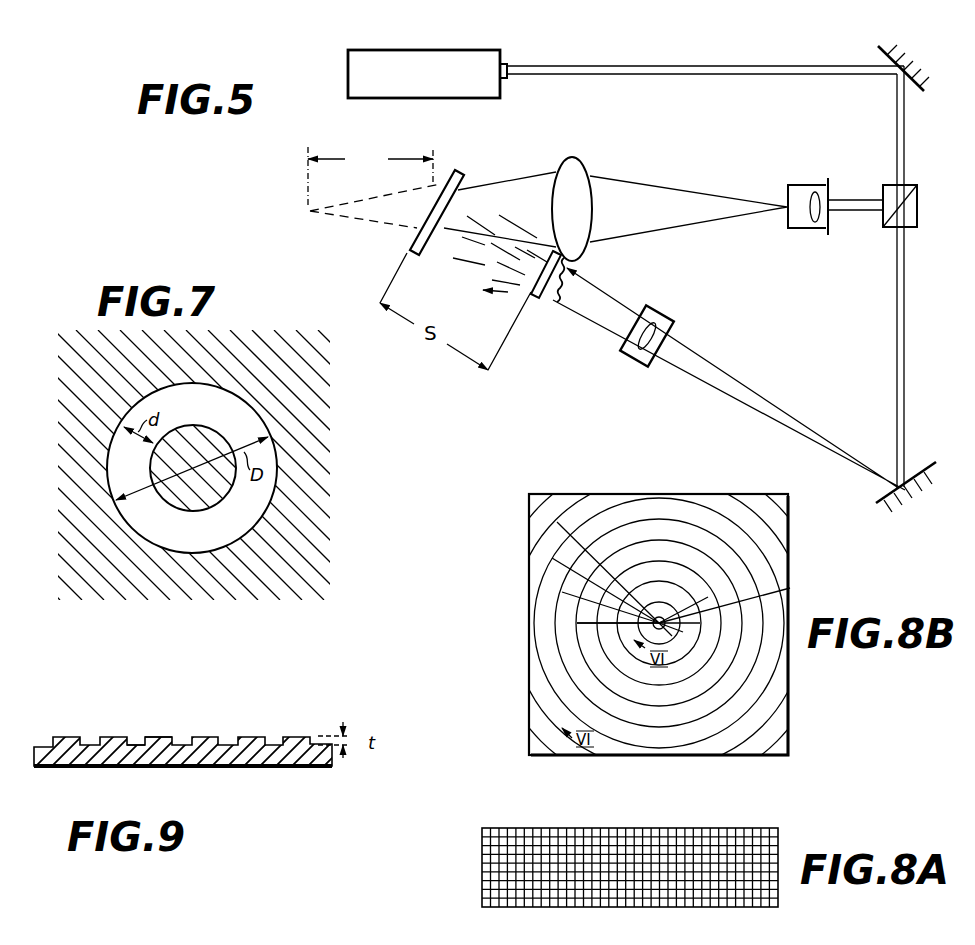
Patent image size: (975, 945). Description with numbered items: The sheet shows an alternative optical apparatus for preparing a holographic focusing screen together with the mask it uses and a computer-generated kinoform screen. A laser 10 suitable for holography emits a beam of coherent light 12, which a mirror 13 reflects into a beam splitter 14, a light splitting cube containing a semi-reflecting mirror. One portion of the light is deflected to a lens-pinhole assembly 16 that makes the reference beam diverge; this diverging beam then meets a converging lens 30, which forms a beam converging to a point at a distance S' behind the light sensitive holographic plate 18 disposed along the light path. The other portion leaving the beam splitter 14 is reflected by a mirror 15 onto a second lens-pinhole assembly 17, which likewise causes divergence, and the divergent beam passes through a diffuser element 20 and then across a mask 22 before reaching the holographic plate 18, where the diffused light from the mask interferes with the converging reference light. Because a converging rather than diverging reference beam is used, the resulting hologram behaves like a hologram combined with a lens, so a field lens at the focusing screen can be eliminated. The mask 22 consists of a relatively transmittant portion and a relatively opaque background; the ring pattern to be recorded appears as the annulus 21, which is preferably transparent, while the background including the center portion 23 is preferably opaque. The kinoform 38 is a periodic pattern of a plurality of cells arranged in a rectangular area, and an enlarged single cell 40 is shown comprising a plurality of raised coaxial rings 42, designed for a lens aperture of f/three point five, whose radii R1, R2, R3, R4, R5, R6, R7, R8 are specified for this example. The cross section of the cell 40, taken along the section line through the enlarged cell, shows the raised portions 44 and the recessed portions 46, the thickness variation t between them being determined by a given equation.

In FIG. 5, the laser 10 is at (410, 50).
In FIG. 5, the beam of coherent light 12 is at (640, 66).
In FIG. 5, the mirror 13 is at (882, 58).
In FIG. 5, the beam splitter 14 is at (917, 228).
In FIG. 5, the mirror 15 is at (890, 492).
In FIG. 5, the lens-pinhole assembly 16 is at (800, 186).
In FIG. 5, the second lens-pinhole assembly 17 is at (660, 312).
In FIG. 5, the holographic plate 18 is at (412, 238).
In FIG. 5, the diffuser element 20 is at (548, 300).
In FIG. 7, the annulus 21 is at (262, 496).
In FIG. 5, the mask 22 is at (532, 290).
In FIG. 7, the mask 22 is at (312, 430).
In FIG. 7, the center portion 23 is at (198, 506).
In FIG. 5, the converging lens 30 is at (580, 166).
In FIG. 8A, the kinoform 38 is at (778, 838).
In FIG. 8B, the cell 40 is at (789, 737).
In FIG. 8A, the cell 40 is at (482, 848).
In FIG. 9, the cell 40 is at (203, 758).
In FIG. 8B, the rings 42 is at (688, 520).
In FIG. 9, the raised portions 44 is at (165, 738).
In FIG. 9, the recessed portions 46 is at (133, 744).
In FIG. 8B, the ring radius R1 is at (672, 636).
In FIG. 8B, the ring radius R2 is at (683, 632).
In FIG. 8B, the ring radius R3 is at (790, 588).
In FIG. 8B, the ring radius R4 is at (708, 597).
In FIG. 8B, the ring radius R5 is at (577, 624).
In FIG. 8B, the ring radius R6 is at (563, 592).
In FIG. 8B, the ring radius R7 is at (552, 558).
In FIG. 8B, the ring radius R8 is at (557, 522).